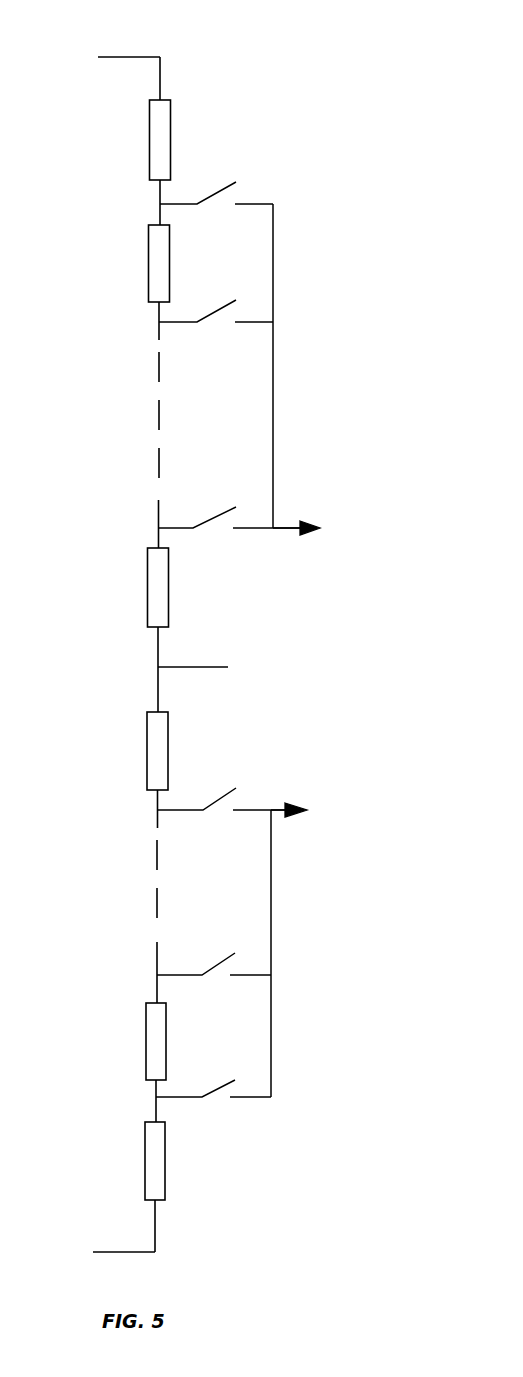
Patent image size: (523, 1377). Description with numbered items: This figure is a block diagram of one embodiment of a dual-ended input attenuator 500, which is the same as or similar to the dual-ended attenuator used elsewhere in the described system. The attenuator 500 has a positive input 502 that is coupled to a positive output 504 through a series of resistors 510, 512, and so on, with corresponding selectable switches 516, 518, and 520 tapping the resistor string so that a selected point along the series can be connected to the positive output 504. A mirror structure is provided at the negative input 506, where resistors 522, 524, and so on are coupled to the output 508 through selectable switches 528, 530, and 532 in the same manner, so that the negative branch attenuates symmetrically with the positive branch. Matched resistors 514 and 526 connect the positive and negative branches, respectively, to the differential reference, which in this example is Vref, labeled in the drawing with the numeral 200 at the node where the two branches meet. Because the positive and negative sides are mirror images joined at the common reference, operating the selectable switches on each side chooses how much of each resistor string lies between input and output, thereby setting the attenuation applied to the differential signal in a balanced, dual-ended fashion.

The dual-ended input attenuator 500 is at (377, 102).
The positive input 502 is at (128, 52).
The positive output 504 is at (300, 543).
The negative input 506 is at (157, 1240).
The output 508 is at (297, 800).
The resistor 510 is at (150, 130).
The resistor 512 is at (148, 237).
The matched resistor 514 is at (147, 562).
The selectable switch 516 is at (217, 185).
The selectable switch 518 is at (218, 313).
The selectable switch 520 is at (220, 512).
The resistor 522 is at (145, 1145).
The resistor 524 is at (146, 1023).
The matched resistor 526 is at (147, 722).
The selectable switch 528 is at (215, 1083).
The selectable switch 530 is at (202, 967).
The selectable switch 532 is at (220, 793).
The reference voltage node Vref 200 is at (198, 660).